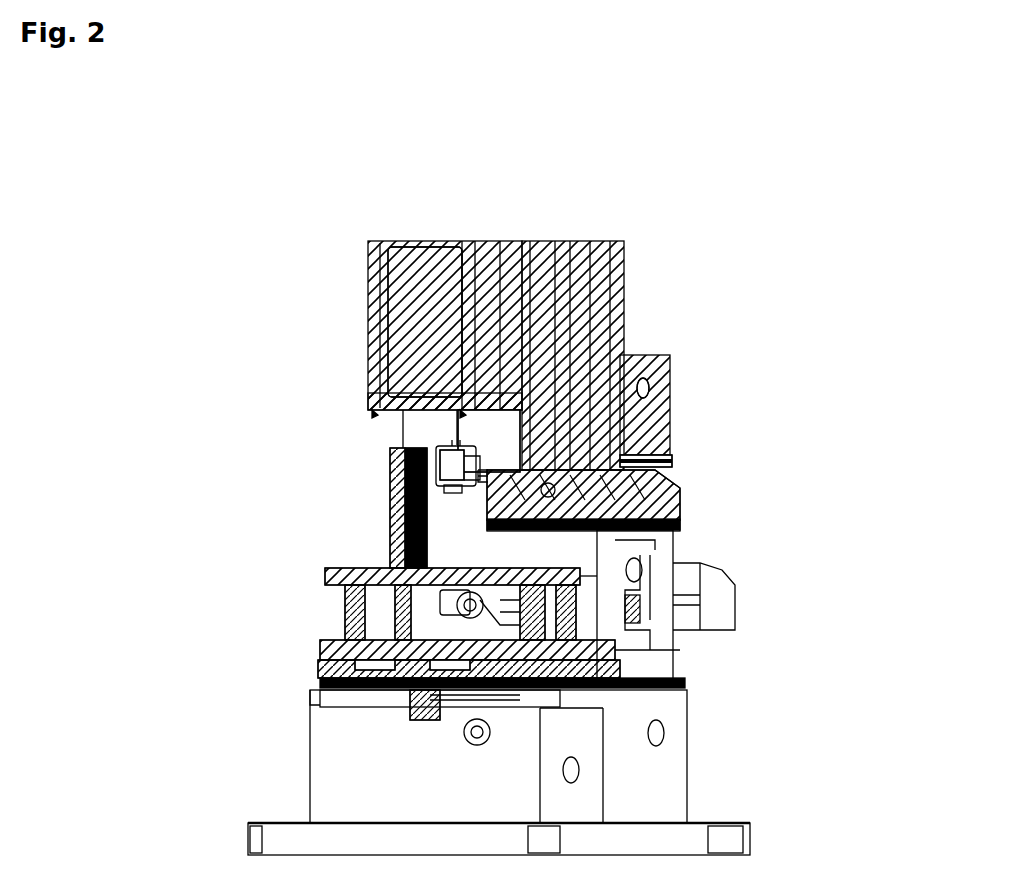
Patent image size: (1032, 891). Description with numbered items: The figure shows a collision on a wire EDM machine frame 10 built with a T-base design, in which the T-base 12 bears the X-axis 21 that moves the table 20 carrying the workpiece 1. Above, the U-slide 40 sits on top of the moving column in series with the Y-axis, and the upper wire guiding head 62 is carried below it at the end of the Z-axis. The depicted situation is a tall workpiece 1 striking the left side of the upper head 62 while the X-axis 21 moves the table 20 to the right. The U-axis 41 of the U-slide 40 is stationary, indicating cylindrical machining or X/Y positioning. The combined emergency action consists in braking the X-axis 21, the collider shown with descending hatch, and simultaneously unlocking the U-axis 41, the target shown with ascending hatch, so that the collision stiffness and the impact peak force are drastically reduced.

The machine frame 10 is at (262, 235).
The upper wire guiding head 62 is at (440, 458).
The workpiece 1 is at (400, 552).
The U-slide 40 is at (673, 518).
The U-axis 41 is at (672, 555).
The table 20 is at (327, 643).
The X-axis 21 is at (307, 678).
The T-base 12 is at (654, 803).